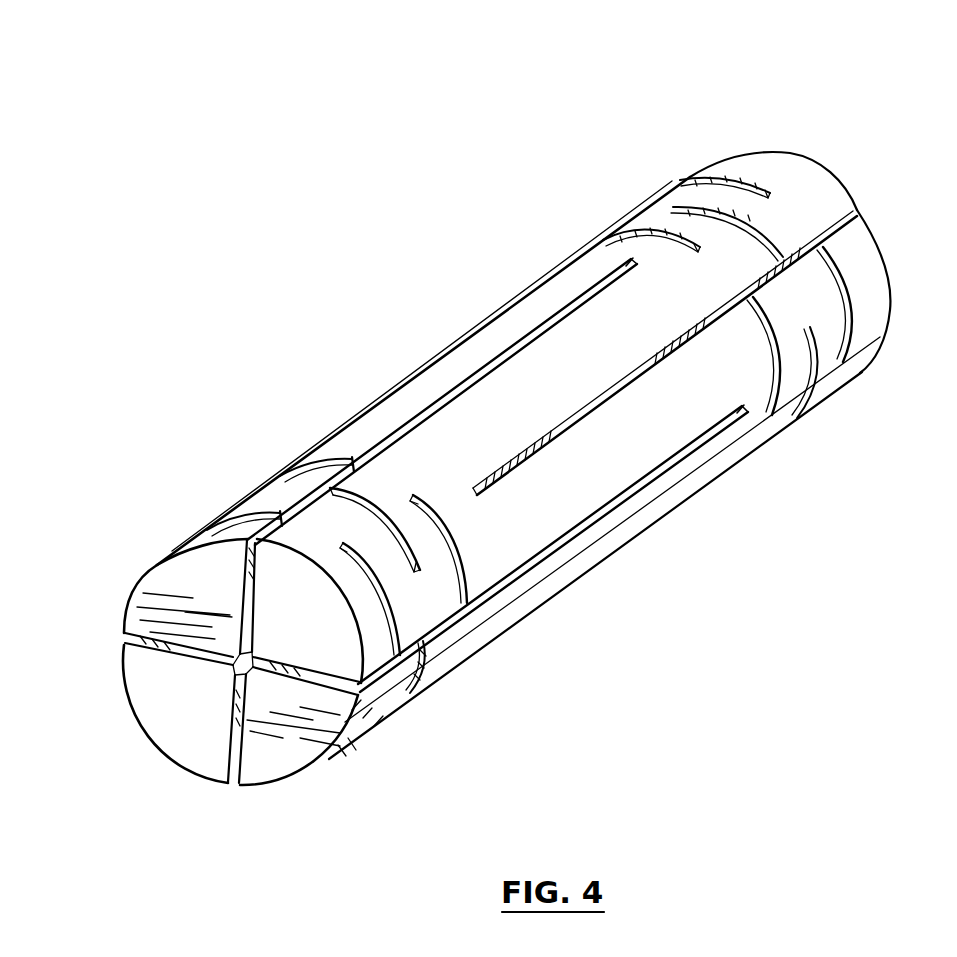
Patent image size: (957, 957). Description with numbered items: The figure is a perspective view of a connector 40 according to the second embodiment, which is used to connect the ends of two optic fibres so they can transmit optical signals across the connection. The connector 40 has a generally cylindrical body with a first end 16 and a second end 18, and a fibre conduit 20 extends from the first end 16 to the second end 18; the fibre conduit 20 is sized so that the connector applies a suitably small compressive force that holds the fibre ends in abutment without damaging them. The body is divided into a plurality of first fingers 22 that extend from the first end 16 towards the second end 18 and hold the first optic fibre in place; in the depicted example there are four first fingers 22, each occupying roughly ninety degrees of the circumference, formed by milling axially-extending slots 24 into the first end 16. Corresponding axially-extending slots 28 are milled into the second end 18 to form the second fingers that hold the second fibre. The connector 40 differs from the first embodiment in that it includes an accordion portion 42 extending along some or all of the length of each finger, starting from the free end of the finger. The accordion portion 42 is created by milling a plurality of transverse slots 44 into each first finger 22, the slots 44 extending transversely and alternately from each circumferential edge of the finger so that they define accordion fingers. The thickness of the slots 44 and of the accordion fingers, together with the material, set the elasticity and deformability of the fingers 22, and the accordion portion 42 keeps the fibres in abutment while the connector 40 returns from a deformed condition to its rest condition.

The first end 16 is at (210, 748).
The second end 18 is at (856, 187).
The fibre conduit 20 is at (228, 669).
The first fingers 22 is at (170, 573).
The axially-extending slots 24 is at (532, 336).
The axially-extending slots 28 is at (620, 386).
The connector 40 is at (617, 130).
The accordion portion 42 is at (380, 717).
The transverse slots 44 is at (634, 218).